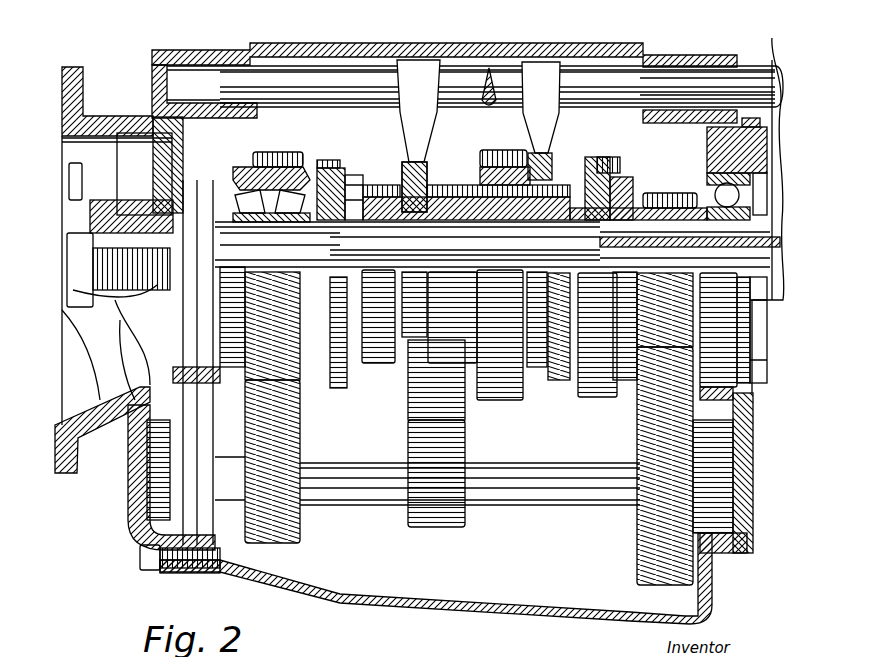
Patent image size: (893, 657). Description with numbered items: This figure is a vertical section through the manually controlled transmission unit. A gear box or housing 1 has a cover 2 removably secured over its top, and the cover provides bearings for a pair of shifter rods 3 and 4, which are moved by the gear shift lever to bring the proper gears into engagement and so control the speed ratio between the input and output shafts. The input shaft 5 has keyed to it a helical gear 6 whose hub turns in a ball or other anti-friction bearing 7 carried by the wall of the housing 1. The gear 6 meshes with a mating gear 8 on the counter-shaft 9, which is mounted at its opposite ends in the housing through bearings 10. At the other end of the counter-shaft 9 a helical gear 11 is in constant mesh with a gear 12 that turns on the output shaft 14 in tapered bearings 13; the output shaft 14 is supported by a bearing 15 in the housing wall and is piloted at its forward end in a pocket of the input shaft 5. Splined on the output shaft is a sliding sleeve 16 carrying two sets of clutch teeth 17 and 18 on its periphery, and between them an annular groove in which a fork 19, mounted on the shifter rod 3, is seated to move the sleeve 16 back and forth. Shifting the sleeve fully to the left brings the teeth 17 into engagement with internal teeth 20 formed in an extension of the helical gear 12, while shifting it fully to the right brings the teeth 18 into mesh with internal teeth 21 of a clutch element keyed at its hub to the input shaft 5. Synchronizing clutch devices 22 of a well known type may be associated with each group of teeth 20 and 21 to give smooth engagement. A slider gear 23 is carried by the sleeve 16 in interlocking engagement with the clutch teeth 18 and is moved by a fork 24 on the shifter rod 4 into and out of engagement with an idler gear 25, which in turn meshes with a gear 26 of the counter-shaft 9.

The gear box or housing 1 is at (458, 613).
The cover 2 is at (378, 47).
The shifter rod 3 is at (322, 92).
The shifter rod 4 is at (598, 82).
The input shaft 5 is at (778, 60).
The helical gear 6 is at (665, 200).
The ball or anti-friction bearing 7 is at (735, 185).
The mating gear 8 is at (637, 541).
The counter-shaft 9 is at (540, 500).
The bearings 10 is at (195, 515).
The helical gear 11 is at (298, 530).
The gear 12 is at (275, 163).
The tapered bearings 13 is at (243, 195).
The output shaft 14 is at (148, 218).
The bearing 15 is at (197, 345).
The sliding sleeve 16 is at (450, 205).
The clutch teeth 17 is at (382, 190).
The clutch teeth 18 is at (567, 190).
The fork 19 is at (425, 70).
The internal teeth 20 is at (350, 185).
The internal teeth 21 is at (636, 185).
The synchronizing clutch devices 22 is at (322, 165).
The slider gear 23 is at (486, 162).
The fork 24 is at (532, 133).
The idler gear 25 is at (412, 383).
The gear 26 is at (440, 517).